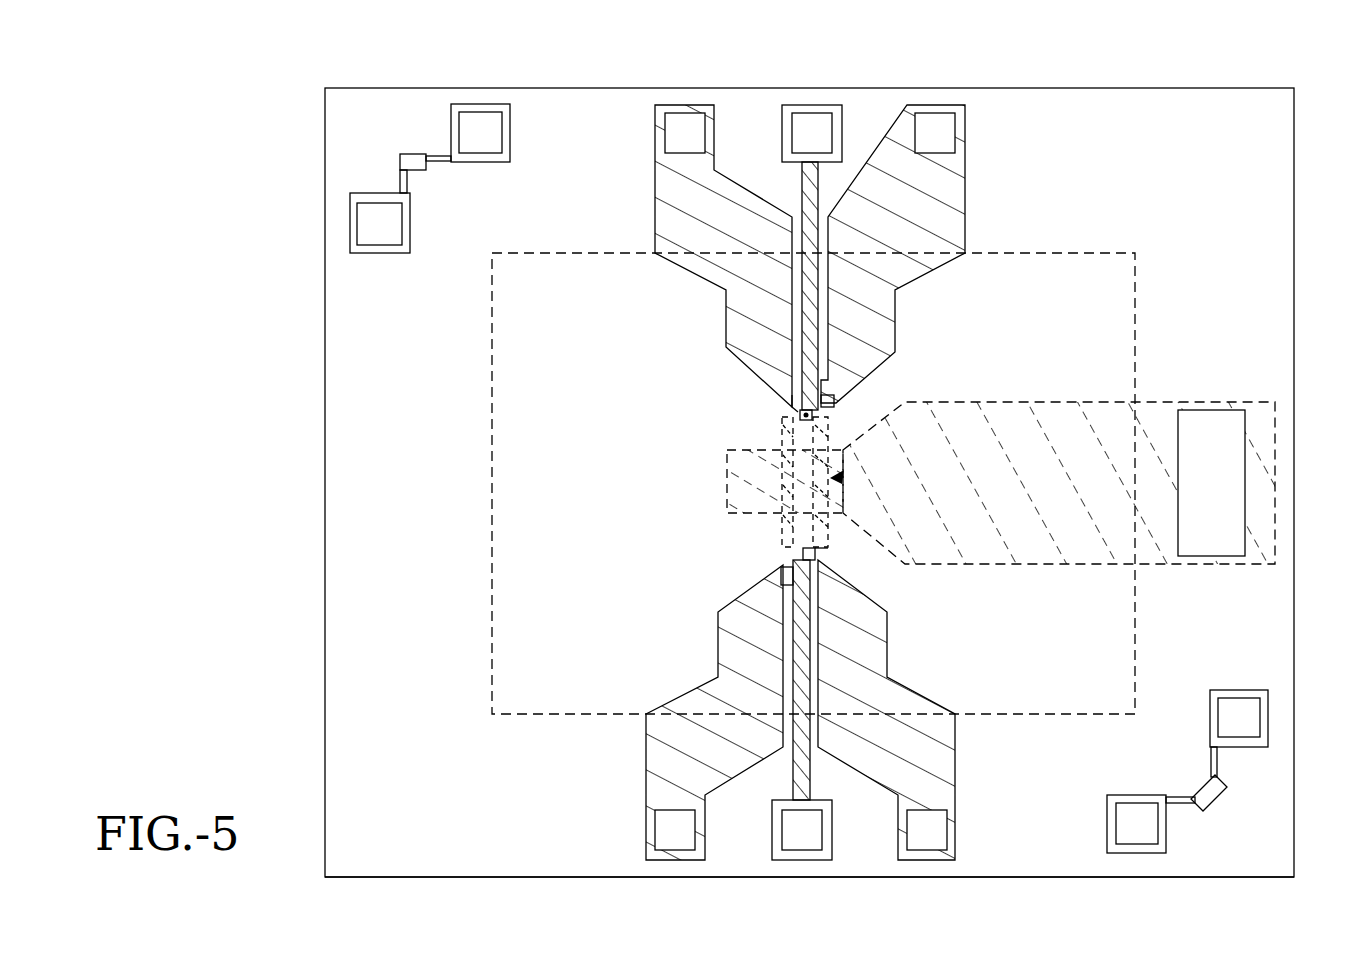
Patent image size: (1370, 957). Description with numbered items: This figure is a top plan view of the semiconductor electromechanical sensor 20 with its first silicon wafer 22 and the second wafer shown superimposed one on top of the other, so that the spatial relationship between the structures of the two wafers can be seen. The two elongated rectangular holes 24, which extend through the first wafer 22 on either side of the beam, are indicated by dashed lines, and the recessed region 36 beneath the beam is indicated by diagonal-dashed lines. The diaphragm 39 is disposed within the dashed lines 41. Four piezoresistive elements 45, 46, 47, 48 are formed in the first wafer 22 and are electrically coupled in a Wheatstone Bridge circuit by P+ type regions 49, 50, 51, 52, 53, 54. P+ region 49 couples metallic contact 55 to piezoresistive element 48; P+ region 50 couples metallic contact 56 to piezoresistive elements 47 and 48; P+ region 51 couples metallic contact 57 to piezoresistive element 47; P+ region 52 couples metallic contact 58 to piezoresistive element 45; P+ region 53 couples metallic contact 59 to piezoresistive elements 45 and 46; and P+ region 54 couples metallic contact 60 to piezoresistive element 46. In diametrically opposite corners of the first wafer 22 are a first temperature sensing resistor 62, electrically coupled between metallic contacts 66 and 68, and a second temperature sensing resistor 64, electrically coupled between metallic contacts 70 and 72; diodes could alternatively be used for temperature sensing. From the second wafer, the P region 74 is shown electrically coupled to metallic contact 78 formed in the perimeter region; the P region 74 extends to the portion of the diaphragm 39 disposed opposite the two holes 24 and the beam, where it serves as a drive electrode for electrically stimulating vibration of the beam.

The semiconductor electromechanical sensor 20 is at (1240, 878).
The first silicon wafer 22 is at (1130, 88).
The elongated rectangular holes 24 is at (742, 490).
The recessed region 36 is at (842, 477).
The diaphragm 39 is at (1072, 323).
The dashed lines 41 is at (500, 458).
The piezoresistive element 45 is at (804, 419).
The piezoresistive element 46 is at (836, 404).
The piezoresistive element 47 is at (830, 550).
The piezoresistive element 48 is at (797, 552).
The P+ type region 49 is at (761, 651).
The P+ type region 50 is at (815, 556).
The P+ type region 51 is at (863, 651).
The P+ type region 52 is at (728, 310).
The P+ type region 53 is at (800, 383).
The P+ type region 54 is at (875, 334).
The metallic contact 55 is at (662, 844).
The metallic contact 56 is at (789, 844).
The metallic contact 57 is at (914, 844).
The metallic contact 58 is at (672, 147).
The metallic contact 59 is at (799, 147).
The metallic contact 60 is at (922, 147).
The first temperature sensing resistor 62 is at (440, 190).
The second temperature sensing resistor 64 is at (1196, 776).
The metallic contact 66 is at (367, 237).
The metallic contact 68 is at (467, 146).
The metallic contact 70 is at (1124, 837).
The metallic contact 72 is at (1226, 731).
The P region 74 is at (1061, 481).
The metallic contact 78 is at (1223, 491).